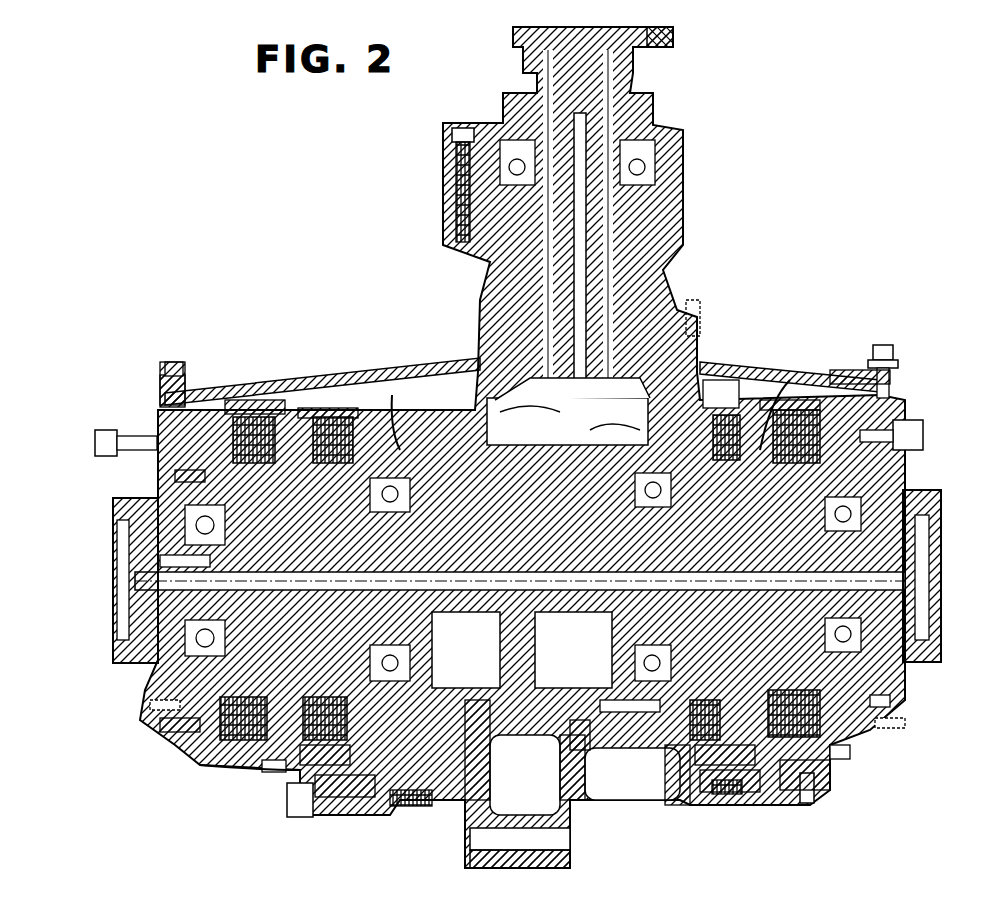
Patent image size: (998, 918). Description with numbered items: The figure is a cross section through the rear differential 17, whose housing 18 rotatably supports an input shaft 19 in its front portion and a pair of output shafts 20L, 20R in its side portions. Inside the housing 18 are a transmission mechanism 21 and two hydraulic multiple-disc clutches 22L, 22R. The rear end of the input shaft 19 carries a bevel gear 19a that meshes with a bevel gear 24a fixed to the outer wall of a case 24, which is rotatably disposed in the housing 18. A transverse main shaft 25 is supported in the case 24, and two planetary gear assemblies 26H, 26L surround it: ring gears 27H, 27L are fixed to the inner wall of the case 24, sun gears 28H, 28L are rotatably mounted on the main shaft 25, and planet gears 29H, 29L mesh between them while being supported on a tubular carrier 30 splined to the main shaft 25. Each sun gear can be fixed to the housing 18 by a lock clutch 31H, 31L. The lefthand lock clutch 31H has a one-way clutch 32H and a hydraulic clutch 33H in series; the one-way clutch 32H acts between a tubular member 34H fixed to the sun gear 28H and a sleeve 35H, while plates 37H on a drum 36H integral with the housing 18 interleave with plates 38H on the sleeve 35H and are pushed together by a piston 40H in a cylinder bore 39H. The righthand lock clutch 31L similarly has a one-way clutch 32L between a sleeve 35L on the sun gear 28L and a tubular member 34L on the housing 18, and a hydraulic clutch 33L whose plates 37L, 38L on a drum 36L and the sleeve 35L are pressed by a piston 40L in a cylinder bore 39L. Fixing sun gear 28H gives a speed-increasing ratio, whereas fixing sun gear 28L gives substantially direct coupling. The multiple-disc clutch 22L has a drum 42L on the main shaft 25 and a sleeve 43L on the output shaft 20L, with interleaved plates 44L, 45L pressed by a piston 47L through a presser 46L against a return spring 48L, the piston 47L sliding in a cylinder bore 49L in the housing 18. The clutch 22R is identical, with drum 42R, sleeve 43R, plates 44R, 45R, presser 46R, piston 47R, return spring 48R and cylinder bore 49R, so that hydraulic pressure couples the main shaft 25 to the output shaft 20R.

The rear differential 17 is at (828, 236).
The housing 18 is at (488, 302).
The input shaft 19 is at (603, 292).
The bevel gear 19a is at (693, 345).
The output shaft 20L is at (135, 560).
The output shaft 20R is at (912, 568).
The transmission mechanism 21 is at (498, 725).
The hydraulic multiple-disc clutch 22L is at (238, 405).
The hydraulic multiple-disc clutch 22R is at (862, 372).
The case 24 is at (540, 738).
The bevel gear 24a is at (470, 812).
The main shaft 25 is at (605, 758).
The planetary gear assembly 26H is at (531, 414).
The planetary gear assembly 26L is at (615, 431).
The ring gear 27H is at (497, 775).
The ring gear 27L is at (585, 780).
The sun gear 28H is at (466, 650).
The sun gear 28L is at (573, 650).
The planet gears 29H is at (432, 415).
The planet gears 29L is at (650, 473).
The carrier 30 is at (520, 504).
The lock clutch 31H is at (290, 775).
The lock clutch 31L is at (800, 385).
The one-way clutch 32H is at (173, 430).
The one-way clutch 32L is at (882, 700).
The hydraulic clutch 33H is at (313, 410).
The hydraulic clutch 33L is at (676, 795).
The tubular member 34H is at (205, 580).
The tubular member 34L is at (640, 745).
The sleeve 35H is at (220, 600).
The sleeve 35L is at (862, 520).
The drum 36H is at (322, 780).
The drum 36L is at (745, 795).
The plates 37H is at (335, 417).
The plates 37L is at (792, 430).
The plates 38H is at (305, 770).
The plates 38L is at (710, 795).
The cylinder bore 39H is at (388, 800).
The cylinder bore 39L is at (660, 772).
The piston 40H is at (396, 392).
The piston 40L is at (730, 395).
The drum 42L is at (270, 770).
The drum 42R is at (838, 760).
The sleeve 43L is at (185, 540).
The sleeve 43R is at (862, 606).
The plates 44L is at (262, 417).
The plates 44R is at (825, 410).
The plates 45L is at (262, 768).
The plates 45R is at (790, 795).
The presser 46L is at (165, 725).
The presser 46R is at (895, 405).
The piston 47L is at (185, 480).
The piston 47R is at (875, 476).
The return spring 48L is at (150, 448).
The return spring 48R is at (820, 755).
The cylinder bore 49L is at (150, 705).
The cylinder bore 49R is at (885, 724).